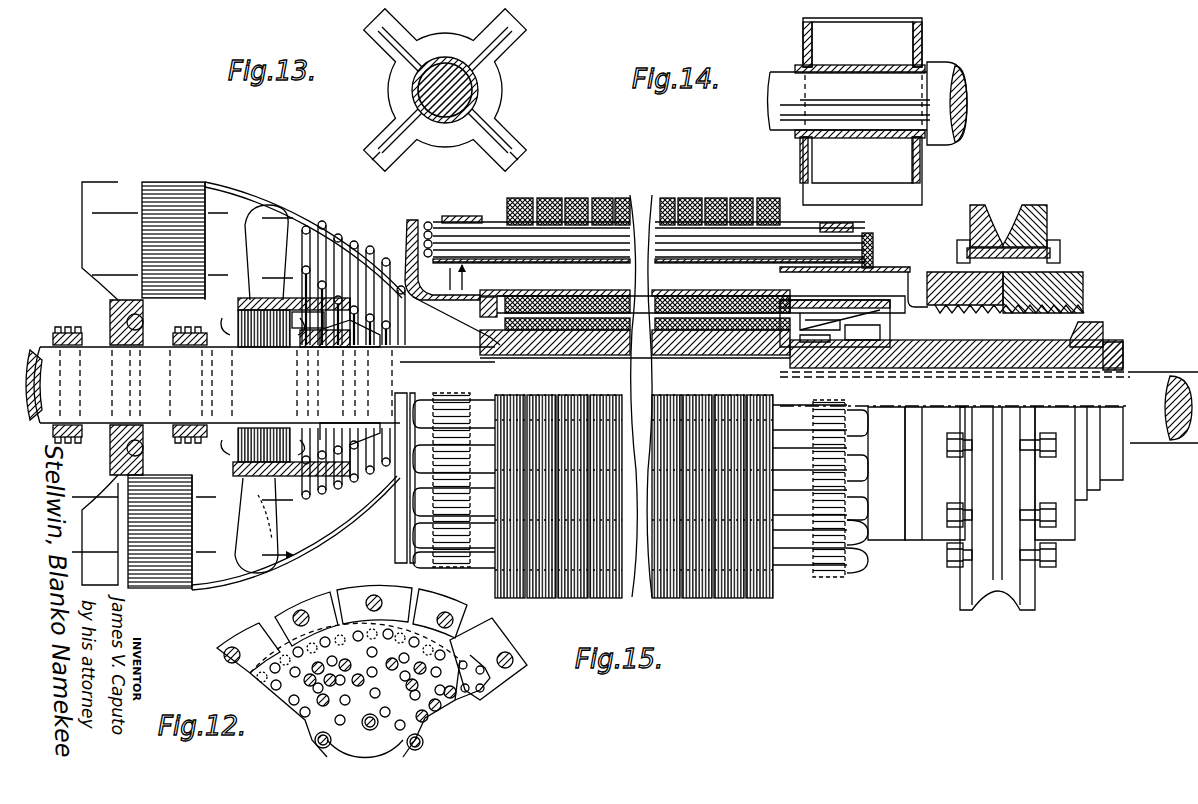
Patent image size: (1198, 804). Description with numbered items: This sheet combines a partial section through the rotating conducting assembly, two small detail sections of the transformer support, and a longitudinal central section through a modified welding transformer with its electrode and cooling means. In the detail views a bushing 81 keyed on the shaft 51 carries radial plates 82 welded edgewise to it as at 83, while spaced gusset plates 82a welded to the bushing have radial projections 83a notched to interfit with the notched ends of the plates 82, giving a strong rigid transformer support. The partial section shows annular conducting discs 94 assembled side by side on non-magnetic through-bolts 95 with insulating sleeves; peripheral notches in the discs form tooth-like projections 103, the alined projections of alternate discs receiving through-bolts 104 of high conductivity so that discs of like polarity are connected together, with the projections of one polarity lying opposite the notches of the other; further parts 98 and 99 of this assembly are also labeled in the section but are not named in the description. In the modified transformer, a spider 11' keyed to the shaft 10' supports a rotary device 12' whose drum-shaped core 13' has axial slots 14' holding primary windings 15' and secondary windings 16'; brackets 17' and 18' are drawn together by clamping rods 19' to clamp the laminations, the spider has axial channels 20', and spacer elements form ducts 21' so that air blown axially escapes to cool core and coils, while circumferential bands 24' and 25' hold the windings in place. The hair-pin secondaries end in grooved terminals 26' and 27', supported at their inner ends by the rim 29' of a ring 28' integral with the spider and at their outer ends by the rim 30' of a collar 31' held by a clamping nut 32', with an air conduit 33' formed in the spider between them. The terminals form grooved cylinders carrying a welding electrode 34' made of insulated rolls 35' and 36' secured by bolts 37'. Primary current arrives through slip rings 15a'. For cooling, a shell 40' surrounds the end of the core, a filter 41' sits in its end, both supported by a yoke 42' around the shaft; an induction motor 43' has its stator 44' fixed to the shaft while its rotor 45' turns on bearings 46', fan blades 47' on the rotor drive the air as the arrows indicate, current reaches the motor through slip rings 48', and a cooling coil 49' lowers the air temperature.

In FIG. 15, the shaft 10' is at (578, 363).
In FIG. 15, the slip rings 15a' is at (61, 373).
In FIG. 15, the shell 40' is at (298, 376).
In FIG. 15, the filter 41' is at (148, 385).
In FIG. 15, the yoke 42' is at (99, 383).
In FIG. 15, the induction motor 43' is at (292, 317).
In FIG. 15, the stator 44' is at (263, 344).
In FIG. 15, the rotor 45' is at (290, 455).
In FIG. 15, the bearings 46' is at (321, 349).
In FIG. 15, the fan blades 47' is at (246, 389).
In FIG. 15, the slip rings 48' is at (177, 398).
In FIG. 15, the cooling coil 49' is at (353, 355).
In FIG. 15, the bracket 17' is at (452, 266).
In FIG. 15, the core 13' is at (578, 399).
In FIG. 15, the spider 11' is at (531, 218).
In FIG. 15, the rotary device 12' is at (648, 385).
In FIG. 15, the clamping rods 19' is at (694, 199).
In FIG. 15, the secondary windings 16' is at (760, 218).
In FIG. 15, the primary windings 15' is at (865, 415).
In FIG. 15, the axial channels 20' is at (643, 341).
In FIG. 15, the bracket 18' is at (674, 355).
In FIG. 15, the ring 28' is at (847, 344).
In FIG. 15, the rim 29' is at (840, 319).
In FIG. 15, the terminal 26' is at (891, 278).
In FIG. 15, the terminal 27' is at (1027, 298).
In FIG. 15, the rim 30' is at (1099, 326).
In FIG. 15, the clamping nut 32' is at (1131, 356).
In FIG. 15, the conduit 33' is at (801, 361).
In FIG. 15, the roll 35' is at (965, 224).
In FIG. 15, the roll 36' is at (1043, 226).
In FIG. 15, the bolts 37' is at (1030, 253).
In FIG. 15, the collar 31' is at (1144, 423).
In FIG. 15, the welding electrode 34' is at (1014, 508).
In FIG. 15, the axial slots 14' is at (876, 473).
In FIG. 15, the ducts 21' is at (634, 514).
In FIG. 15, the circumferential band 24' is at (445, 492).
In FIG. 15, the circumferential band 25' is at (810, 503).
In FIG. 13, the radial plates 82 is at (483, 38).
In FIG. 14, the radial plates 82 is at (905, 30).
In FIG. 13, the gusset plates 82a is at (450, 140).
In FIG. 14, the gusset plates 82a is at (800, 145).
In FIG. 13, the bushing 81 is at (480, 92).
In FIG. 14, the bushing 81 is at (858, 135).
In FIG. 13, the shaft 51 is at (430, 96).
In FIG. 14, the shaft 51 is at (945, 90).
In FIG. 13, the weld 83 is at (477, 70).
In FIG. 13, the radial projections 83a is at (510, 142).
In FIG. 12, the tooth-like projections 103 is at (318, 612).
In FIG. 12, the through-bolts 104 is at (298, 620).
In FIG. 12, the annular conducting discs 94 is at (448, 710).
In FIG. 12, the through-bolts 95 is at (370, 730).
In FIG. 12, the conductor 98 is at (456, 698).
In FIG. 12, the conductor 99 is at (470, 684).